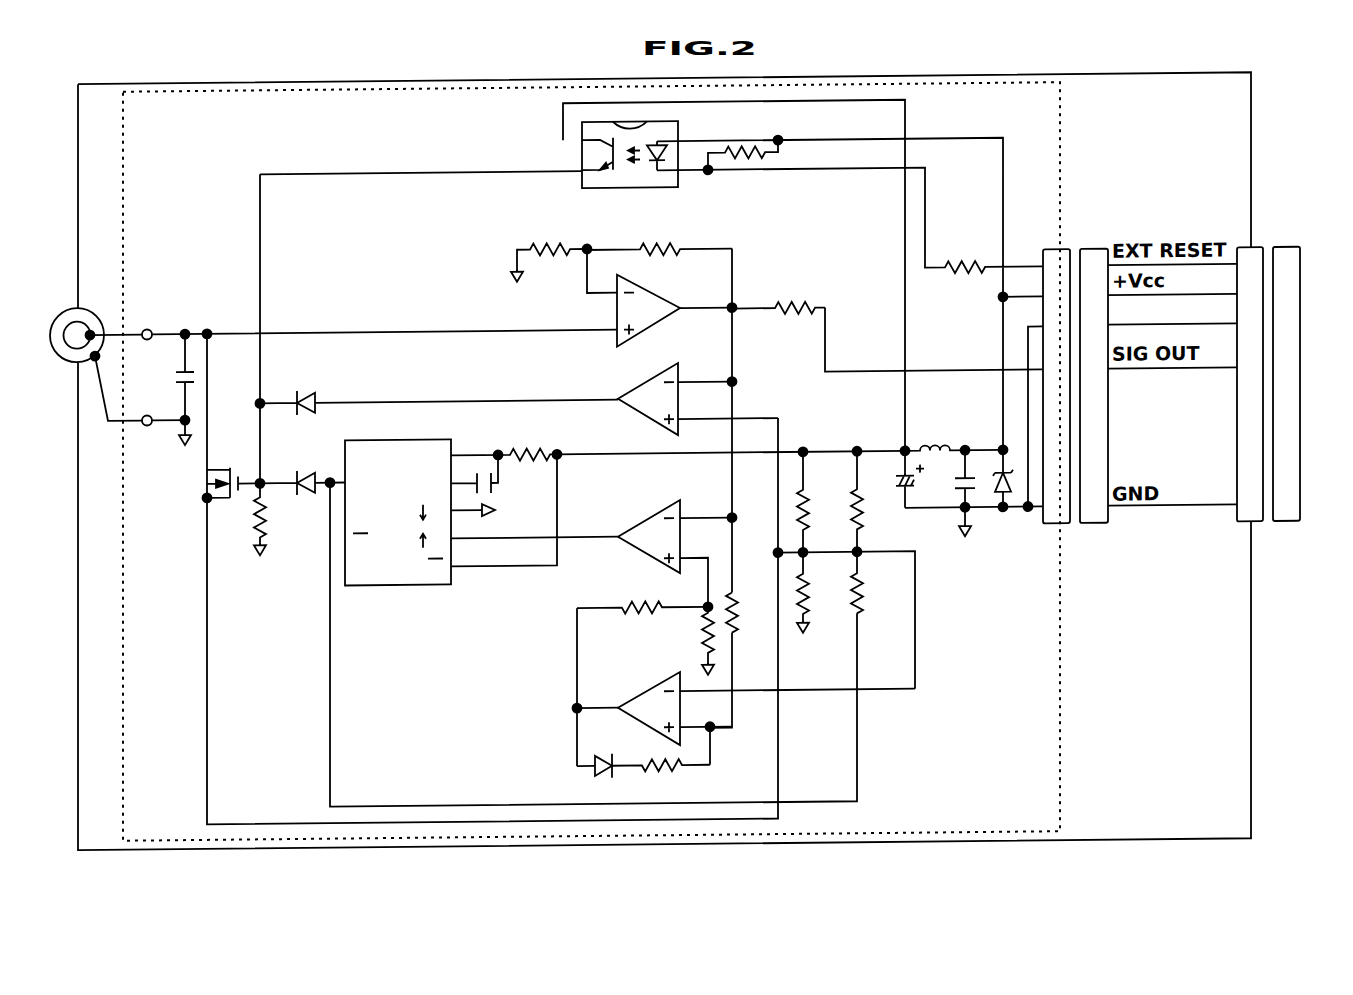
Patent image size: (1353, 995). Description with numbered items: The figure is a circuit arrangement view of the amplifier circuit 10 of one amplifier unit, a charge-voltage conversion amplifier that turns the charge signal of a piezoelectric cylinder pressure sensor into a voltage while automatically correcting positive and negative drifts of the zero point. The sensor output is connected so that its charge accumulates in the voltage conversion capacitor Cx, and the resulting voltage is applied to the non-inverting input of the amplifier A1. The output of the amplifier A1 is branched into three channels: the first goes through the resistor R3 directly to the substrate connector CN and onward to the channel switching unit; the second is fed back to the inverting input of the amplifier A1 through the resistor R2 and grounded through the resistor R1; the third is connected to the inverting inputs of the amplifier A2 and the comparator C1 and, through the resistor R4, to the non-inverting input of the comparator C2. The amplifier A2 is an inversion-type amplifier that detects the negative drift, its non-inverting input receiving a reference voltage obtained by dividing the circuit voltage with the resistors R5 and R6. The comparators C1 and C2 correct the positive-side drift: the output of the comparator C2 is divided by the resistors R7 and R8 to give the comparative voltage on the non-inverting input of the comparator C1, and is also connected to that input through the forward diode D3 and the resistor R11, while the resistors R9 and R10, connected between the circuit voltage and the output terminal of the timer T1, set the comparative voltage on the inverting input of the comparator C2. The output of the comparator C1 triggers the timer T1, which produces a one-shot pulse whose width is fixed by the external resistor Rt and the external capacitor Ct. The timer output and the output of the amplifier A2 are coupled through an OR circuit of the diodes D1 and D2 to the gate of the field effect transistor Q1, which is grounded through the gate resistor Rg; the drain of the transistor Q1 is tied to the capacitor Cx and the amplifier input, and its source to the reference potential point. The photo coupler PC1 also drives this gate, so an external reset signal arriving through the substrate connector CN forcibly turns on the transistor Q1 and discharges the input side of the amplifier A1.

The amplifier circuit 10 is at (1078, 151).
The substrate connector CN is at (1075, 370).
The photo coupler PC1 is at (654, 149).
The voltage conversion capacitor Cx is at (168, 390).
The field effect transistor Q1 is at (218, 484).
The gate resistor Rg is at (244, 519).
The diode D1 is at (439, 386).
The diode D2 is at (302, 469).
The forward diode D3 is at (599, 751).
The timer T1 is at (481, 499).
The external resistor Rt is at (506, 441).
The external capacitor Ct is at (489, 476).
The resistor R1 is at (549, 251).
The resistor R2 is at (659, 238).
The resistor R3 is at (778, 297).
The resistor R4 is at (751, 612).
The resistor R5 is at (821, 502).
The resistor R6 is at (821, 592).
The resistor R7 is at (642, 594).
The resistor R8 is at (693, 641).
The resistor R9 is at (874, 501).
The resistor R10 is at (881, 582).
The resistor R11 is at (667, 778).
The amplifier A1 is at (674, 309).
The amplifier A2 is at (693, 399).
The comparator C1 is at (672, 554).
The comparator C2 is at (746, 708).